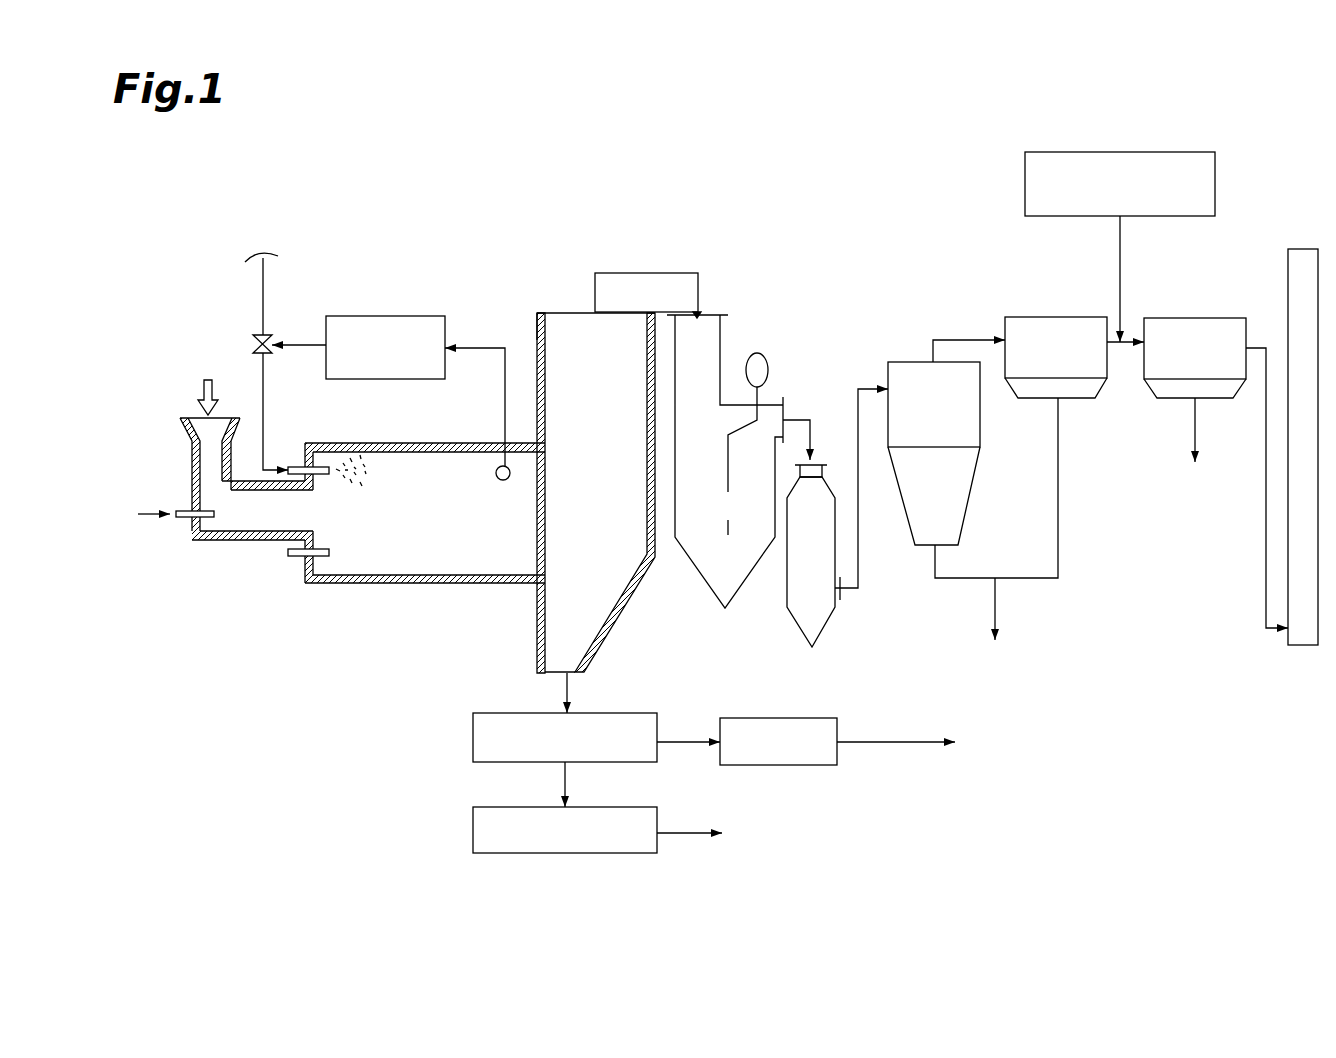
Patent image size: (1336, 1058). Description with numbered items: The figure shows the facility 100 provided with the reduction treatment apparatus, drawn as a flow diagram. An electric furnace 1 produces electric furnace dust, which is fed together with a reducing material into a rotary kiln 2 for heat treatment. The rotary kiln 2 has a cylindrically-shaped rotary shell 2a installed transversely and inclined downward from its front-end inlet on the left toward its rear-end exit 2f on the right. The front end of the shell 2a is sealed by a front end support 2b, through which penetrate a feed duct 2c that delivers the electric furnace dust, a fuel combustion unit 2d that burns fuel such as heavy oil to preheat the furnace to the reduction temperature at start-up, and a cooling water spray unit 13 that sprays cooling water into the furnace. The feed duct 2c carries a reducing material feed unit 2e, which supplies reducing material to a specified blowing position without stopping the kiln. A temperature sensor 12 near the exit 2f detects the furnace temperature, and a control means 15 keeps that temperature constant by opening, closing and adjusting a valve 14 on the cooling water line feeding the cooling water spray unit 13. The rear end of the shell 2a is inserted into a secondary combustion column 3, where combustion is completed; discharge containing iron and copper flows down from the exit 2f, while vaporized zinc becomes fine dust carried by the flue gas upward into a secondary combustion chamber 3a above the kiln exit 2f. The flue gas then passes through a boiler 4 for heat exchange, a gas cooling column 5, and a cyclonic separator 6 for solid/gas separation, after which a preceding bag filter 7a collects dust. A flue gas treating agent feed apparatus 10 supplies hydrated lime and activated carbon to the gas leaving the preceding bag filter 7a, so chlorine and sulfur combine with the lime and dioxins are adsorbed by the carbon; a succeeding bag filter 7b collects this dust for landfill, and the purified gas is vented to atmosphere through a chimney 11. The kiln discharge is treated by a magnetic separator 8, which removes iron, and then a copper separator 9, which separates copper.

The facility 100 is at (675, 205).
The electric furnace 1 is at (783, 765).
The rotary kiln 2 is at (383, 443).
The rotary shell 2a is at (430, 443).
The front end support 2b is at (307, 583).
The feed duct 2c is at (192, 476).
The fuel combustion unit 2d is at (288, 553).
The reducing material feed unit 2e is at (185, 520).
The exit 2f is at (540, 580).
The secondary combustion column 3 is at (612, 630).
The secondary combustion chamber 3a is at (537, 322).
The boiler 4 is at (773, 404).
The gas cooling column 5 is at (828, 480).
The cyclonic separator 6 is at (912, 360).
The preceding bag filter 7a is at (1068, 317).
The succeeding bag filter 7b is at (1212, 318).
The magnetic separator 8 is at (612, 762).
The copper separator 9 is at (612, 853).
The flue gas treating agent feed apparatus 10 is at (1150, 152).
The chimney 11 is at (1288, 256).
The temperature sensor 12 is at (509, 468).
The cooling water spray unit 13 is at (322, 476).
The valve 14 is at (256, 335).
The control means 15 is at (375, 316).